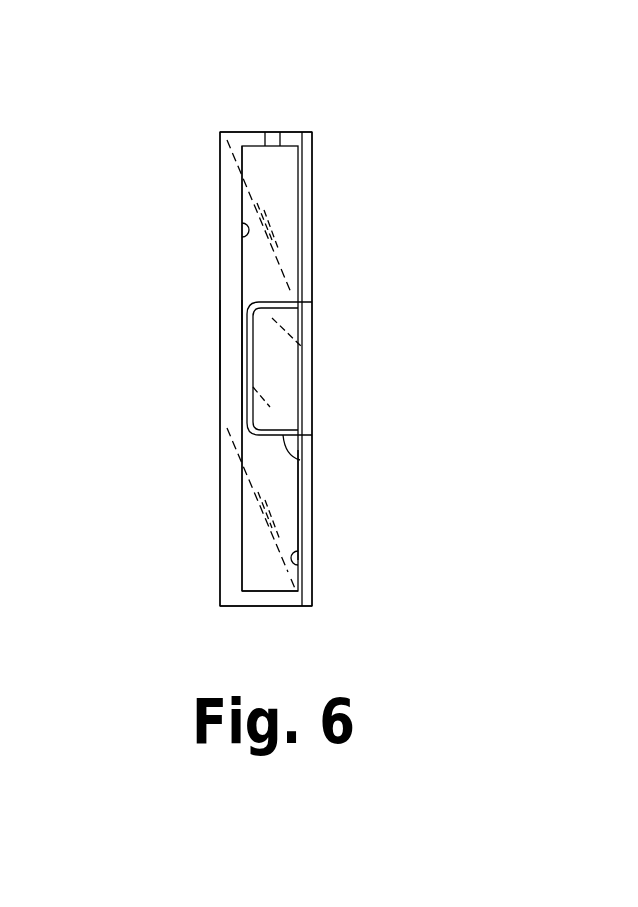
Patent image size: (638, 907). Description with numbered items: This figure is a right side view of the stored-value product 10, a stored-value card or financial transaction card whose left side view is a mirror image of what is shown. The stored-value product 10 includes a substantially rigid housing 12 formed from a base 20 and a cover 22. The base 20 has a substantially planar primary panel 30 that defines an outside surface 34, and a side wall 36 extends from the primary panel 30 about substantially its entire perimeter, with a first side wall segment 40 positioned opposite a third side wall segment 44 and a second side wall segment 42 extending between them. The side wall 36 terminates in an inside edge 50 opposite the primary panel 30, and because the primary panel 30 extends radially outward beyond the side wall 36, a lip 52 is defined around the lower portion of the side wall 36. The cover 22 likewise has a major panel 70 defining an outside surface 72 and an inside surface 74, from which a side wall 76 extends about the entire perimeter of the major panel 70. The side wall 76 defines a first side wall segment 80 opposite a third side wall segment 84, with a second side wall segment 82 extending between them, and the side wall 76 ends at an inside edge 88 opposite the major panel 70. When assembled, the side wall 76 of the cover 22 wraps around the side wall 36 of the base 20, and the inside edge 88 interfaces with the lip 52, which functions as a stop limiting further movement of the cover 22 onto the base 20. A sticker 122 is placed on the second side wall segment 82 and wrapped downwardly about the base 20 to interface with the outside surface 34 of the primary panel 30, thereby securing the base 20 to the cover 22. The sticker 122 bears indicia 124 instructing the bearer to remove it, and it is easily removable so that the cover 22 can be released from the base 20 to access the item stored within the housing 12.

The stored-value product 10 is at (138, 103).
The housing 12 is at (219, 147).
The base 20 is at (314, 154).
The cover 22 is at (218, 203).
The primary panel 30 is at (312, 256).
The first side wall segment 40 is at (265, 132).
The first side wall segment 80 is at (280, 132).
The inside surface 74 is at (245, 237).
The side wall 76 is at (231, 270).
The major panel 70 is at (219, 333).
The outside surface 72 is at (219, 388).
The second side wall segment 82 is at (233, 483).
The inside edge 50 is at (243, 548).
The third side wall segment 44 is at (253, 591).
The third side wall segment 84 is at (283, 606).
The outside surface 34 is at (312, 309).
The second side wall segment 42 is at (312, 354).
The indicia 124 is at (300, 377).
The side wall 36 is at (300, 403).
The sticker 122 is at (300, 460).
The inside edge 88 is at (312, 528).
The lip 52 is at (298, 570).